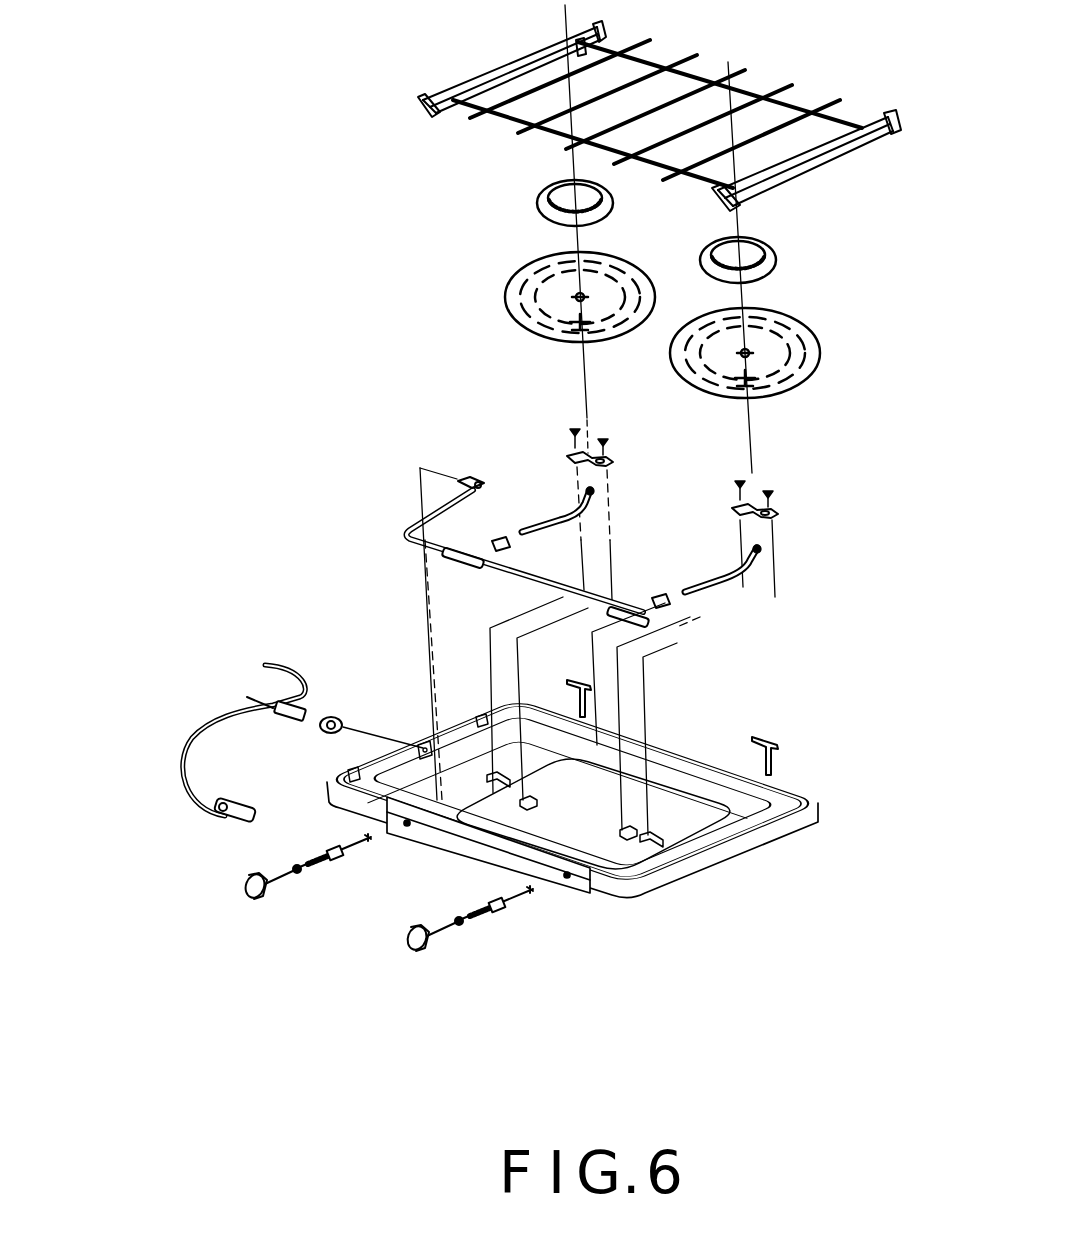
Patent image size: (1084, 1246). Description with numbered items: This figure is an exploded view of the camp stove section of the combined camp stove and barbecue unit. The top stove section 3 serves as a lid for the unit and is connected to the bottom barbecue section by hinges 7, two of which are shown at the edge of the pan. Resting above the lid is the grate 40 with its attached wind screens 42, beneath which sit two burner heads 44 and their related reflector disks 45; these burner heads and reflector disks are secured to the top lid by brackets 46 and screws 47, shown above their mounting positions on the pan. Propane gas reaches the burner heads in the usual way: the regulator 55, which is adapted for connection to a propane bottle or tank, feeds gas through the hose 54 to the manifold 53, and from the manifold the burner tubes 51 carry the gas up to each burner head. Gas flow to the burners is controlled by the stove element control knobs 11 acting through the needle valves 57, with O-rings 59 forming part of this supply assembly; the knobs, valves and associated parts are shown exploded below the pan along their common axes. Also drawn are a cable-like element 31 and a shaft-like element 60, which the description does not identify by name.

The top stove section 3 is at (688, 745).
The hinges 7 is at (775, 760).
The stove element control knobs 11 is at (428, 945).
The cable 31 is at (271, 711).
The grate 40 is at (750, 88).
The wind screens 42 is at (820, 172).
The burner heads 44 is at (777, 260).
The reflector disks 45 is at (830, 350).
The brackets 46 is at (770, 517).
The screws 47 is at (753, 468).
The burner tubes 51 is at (757, 567).
The manifold 53 is at (617, 620).
The hose 54 is at (246, 745).
The regulator 55 is at (173, 837).
The needle valves 57 is at (540, 900).
The O-rings 59 is at (610, 866).
The shaft 60 is at (513, 938).